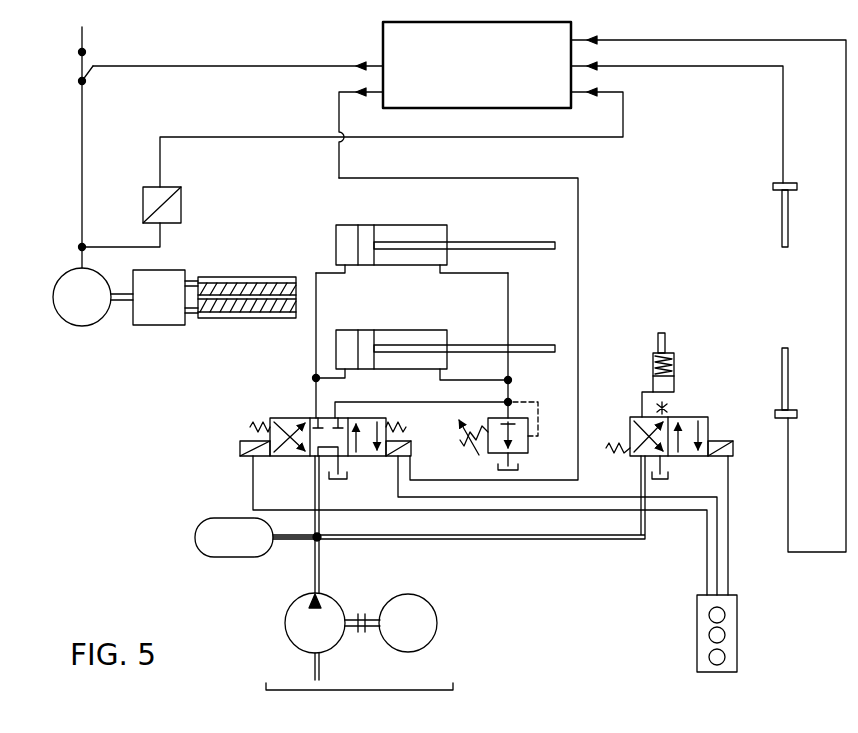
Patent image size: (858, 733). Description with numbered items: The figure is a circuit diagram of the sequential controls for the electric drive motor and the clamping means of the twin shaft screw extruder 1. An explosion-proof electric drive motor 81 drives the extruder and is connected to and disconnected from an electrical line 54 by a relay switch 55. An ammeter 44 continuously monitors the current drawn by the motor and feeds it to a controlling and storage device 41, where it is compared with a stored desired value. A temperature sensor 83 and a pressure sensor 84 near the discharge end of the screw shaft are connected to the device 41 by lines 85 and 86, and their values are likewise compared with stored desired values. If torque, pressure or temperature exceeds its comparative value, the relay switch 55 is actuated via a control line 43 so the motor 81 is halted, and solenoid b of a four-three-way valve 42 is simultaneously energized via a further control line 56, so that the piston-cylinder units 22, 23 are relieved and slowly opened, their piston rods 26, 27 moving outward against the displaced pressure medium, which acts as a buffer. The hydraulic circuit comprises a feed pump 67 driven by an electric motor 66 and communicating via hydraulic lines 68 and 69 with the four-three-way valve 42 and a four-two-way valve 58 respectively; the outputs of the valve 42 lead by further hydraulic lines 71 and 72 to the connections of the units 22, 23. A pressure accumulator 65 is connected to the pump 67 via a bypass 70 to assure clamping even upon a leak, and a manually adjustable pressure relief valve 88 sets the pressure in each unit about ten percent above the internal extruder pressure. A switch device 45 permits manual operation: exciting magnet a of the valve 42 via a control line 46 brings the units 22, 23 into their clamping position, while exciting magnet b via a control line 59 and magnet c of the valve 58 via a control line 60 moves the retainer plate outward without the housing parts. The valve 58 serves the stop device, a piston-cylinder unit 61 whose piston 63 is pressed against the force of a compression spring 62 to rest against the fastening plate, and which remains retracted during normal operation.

The twin shaft screw extruder 1 is at (234, 333).
The piston-cylinder unit 22 is at (392, 230).
The piston-cylinder unit 23 is at (388, 333).
The piston rod 26 is at (499, 240).
The piston rod 27 is at (537, 345).
The controlling and storage device 41 is at (383, 46).
The 4/3-way valve 42 is at (289, 411).
The control line 43 is at (226, 66).
The ammeter 44 is at (182, 200).
The switch device 45 is at (736, 625).
The control line 46 is at (254, 496).
The electrical line 54 is at (80, 200).
The relay switch 55 is at (96, 64).
The control line 56 is at (580, 197).
The 4/2-way valve 58 is at (706, 410).
The control line 59 is at (730, 520).
The control line 60 is at (730, 472).
The piston-cylinder unit 61 is at (648, 369).
The compression spring 62 is at (676, 374).
The piston 63 is at (658, 340).
The pressure accumulator 65 is at (222, 550).
The electric motor 66 is at (437, 626).
The feed pump 67 is at (303, 615).
The hydraulic line 68 is at (321, 558).
The hydraulic line 69 is at (520, 540).
The bypass 70 is at (304, 540).
The hydraulic line 71 is at (510, 280).
The hydraulic line 72 is at (314, 346).
The electric drive motor 81 is at (70, 321).
The temperature sensor 83 is at (781, 356).
The pressure sensor 84 is at (781, 206).
The line 85 is at (846, 280).
The line 86 is at (677, 67).
The pressure relief valve 88 is at (528, 446).